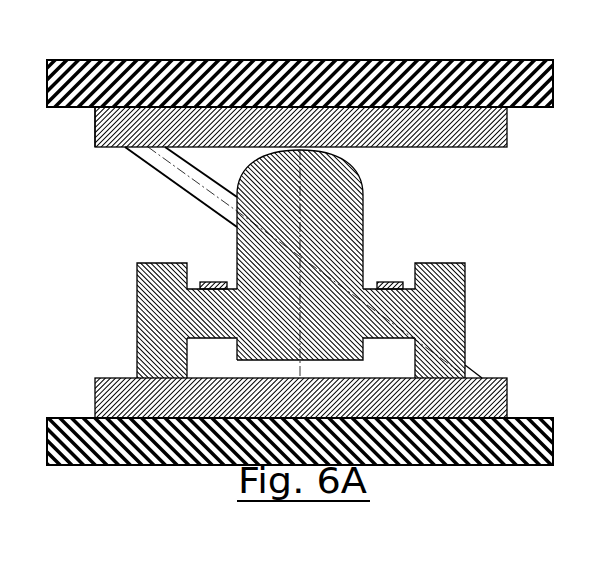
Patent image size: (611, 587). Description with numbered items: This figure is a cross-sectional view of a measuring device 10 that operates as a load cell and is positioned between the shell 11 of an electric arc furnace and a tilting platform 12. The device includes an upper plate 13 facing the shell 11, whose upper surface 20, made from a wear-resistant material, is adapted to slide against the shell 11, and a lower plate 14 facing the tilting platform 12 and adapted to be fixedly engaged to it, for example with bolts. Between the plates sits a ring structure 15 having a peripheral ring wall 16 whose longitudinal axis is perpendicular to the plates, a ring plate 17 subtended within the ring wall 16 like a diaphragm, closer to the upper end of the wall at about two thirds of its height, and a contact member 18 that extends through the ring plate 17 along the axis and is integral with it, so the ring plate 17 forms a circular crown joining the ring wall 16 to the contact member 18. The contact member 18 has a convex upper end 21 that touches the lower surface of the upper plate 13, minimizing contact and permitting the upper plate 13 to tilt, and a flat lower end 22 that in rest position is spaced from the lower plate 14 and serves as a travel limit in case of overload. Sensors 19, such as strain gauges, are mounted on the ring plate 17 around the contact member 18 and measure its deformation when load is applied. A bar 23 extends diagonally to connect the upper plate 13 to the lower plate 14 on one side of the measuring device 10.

The measuring device 10 is at (122, 245).
The shell 11 is at (543, 110).
The tilting platform 12 is at (545, 417).
The upper plate 13 is at (487, 148).
The lower plate 14 is at (508, 380).
The ring structure 15 is at (465, 310).
The ring wall 16 is at (137, 320).
The ring plate 17 is at (208, 340).
The contact member 18 is at (365, 222).
The sensors 19 is at (215, 283).
The upper surface 20 is at (93, 108).
The upper end 21 is at (345, 158).
The lower end 22 is at (357, 363).
The bar 23 is at (158, 173).